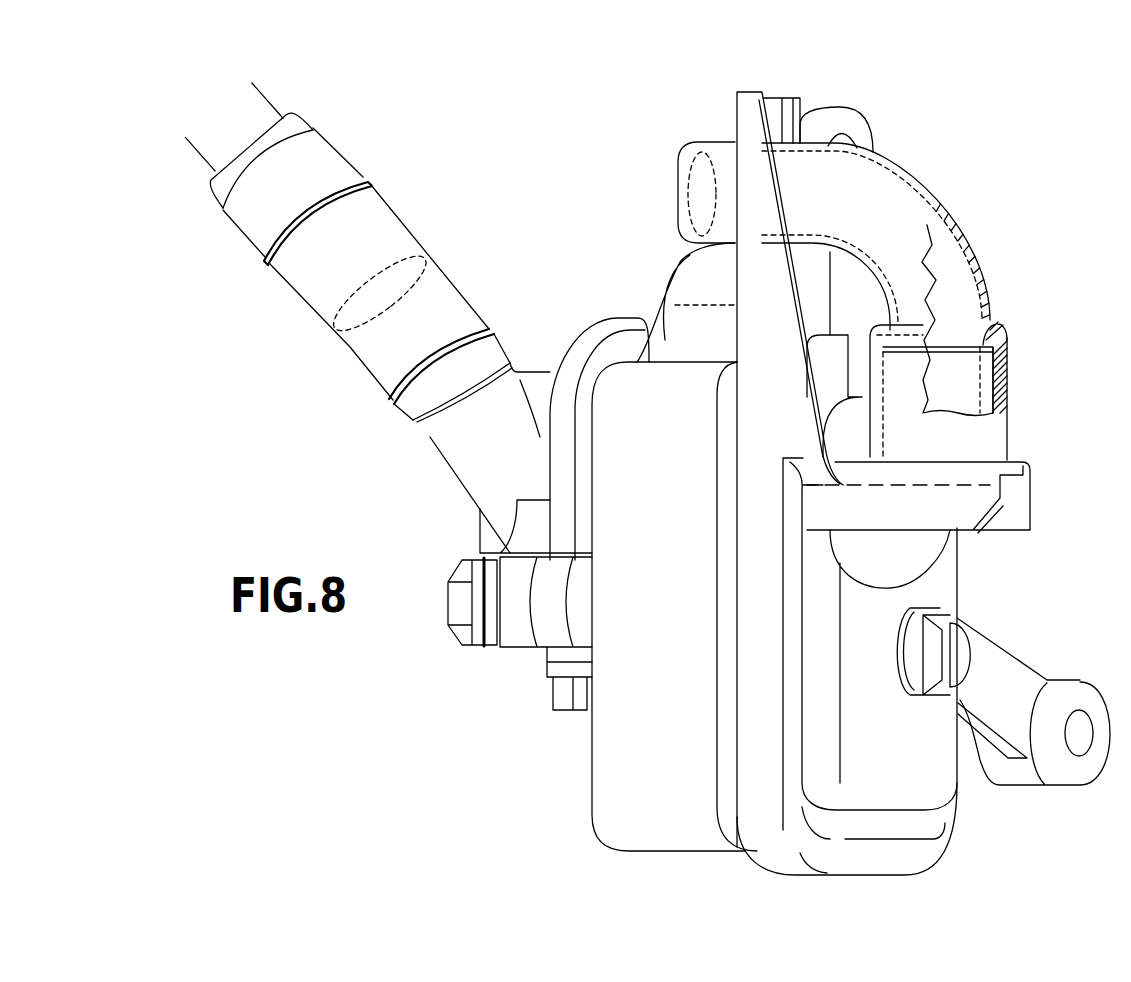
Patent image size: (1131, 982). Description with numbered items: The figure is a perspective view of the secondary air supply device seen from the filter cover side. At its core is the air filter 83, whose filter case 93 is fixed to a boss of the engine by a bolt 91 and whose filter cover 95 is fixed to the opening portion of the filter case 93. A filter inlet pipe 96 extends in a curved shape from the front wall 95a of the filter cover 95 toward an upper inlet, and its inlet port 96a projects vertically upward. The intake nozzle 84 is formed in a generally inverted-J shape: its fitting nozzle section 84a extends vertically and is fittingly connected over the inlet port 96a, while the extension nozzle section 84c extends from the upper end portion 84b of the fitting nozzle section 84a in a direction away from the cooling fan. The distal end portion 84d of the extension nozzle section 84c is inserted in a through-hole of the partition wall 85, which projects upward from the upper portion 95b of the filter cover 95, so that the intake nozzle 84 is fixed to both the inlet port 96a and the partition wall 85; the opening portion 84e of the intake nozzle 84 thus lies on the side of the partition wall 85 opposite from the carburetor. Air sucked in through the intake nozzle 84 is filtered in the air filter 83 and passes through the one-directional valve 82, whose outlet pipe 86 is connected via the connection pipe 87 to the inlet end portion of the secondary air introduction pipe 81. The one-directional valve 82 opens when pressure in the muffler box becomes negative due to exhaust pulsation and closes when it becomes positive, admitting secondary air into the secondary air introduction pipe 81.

The secondary air introduction pipe 81 is at (252, 92).
The one-directional valve 82 is at (607, 334).
The air filter 83 is at (576, 741).
The intake nozzle 84 is at (940, 203).
The fitting nozzle section 84a is at (1009, 398).
The upper end portion 84b is at (1004, 334).
The extension nozzle section 84c is at (875, 154).
The distal end portion 84d is at (790, 140).
The opening portion 84e is at (684, 160).
The partition wall 85 is at (758, 199).
The outlet pipe 86 is at (462, 452).
The connection pipe 87 is at (362, 217).
The bolt 91 is at (958, 648).
The filter case 93 is at (640, 797).
The filter cover 95 is at (758, 630).
The front wall 95a is at (907, 727).
The upper portion 95b is at (713, 340).
The filter inlet pipe 96 is at (924, 557).
The inlet port 96a is at (991, 376).